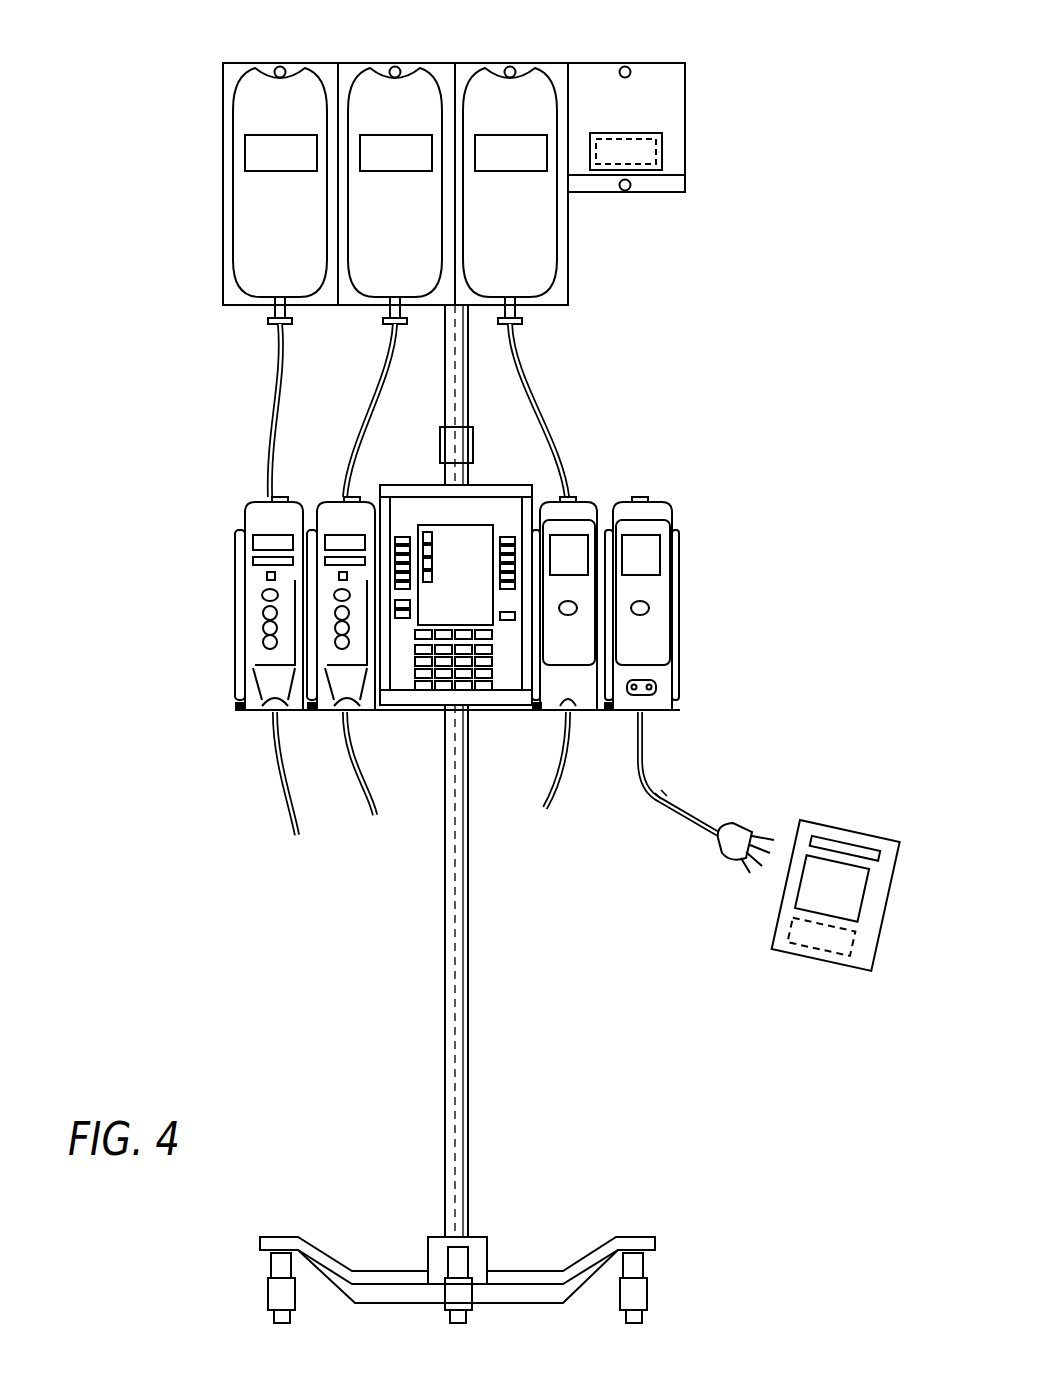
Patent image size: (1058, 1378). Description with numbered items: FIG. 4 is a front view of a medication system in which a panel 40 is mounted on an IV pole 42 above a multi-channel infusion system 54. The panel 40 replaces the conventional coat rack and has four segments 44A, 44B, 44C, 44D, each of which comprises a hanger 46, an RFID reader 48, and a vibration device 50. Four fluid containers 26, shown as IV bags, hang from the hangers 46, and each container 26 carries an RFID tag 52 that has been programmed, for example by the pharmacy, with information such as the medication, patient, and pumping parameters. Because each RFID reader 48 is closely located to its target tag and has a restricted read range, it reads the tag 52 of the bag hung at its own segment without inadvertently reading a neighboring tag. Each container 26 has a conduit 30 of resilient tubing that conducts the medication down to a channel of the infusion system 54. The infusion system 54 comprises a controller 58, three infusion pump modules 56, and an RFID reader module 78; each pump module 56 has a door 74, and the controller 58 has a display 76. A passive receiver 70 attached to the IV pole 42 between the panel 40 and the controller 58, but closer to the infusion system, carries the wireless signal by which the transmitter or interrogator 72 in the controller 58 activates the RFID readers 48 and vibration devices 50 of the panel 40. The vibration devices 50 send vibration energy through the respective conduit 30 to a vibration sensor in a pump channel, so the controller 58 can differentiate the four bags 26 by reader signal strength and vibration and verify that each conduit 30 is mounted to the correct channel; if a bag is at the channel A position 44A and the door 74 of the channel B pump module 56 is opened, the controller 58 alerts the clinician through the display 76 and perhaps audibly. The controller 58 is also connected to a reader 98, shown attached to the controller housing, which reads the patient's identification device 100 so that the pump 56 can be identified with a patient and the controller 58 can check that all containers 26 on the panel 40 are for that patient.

The fluid container 26 is at (243, 248).
The conduit 30 is at (278, 412).
The panel 40 is at (506, 155).
The IV pole 42 is at (470, 365).
The segment 44A is at (240, 63).
The segment 44B is at (353, 63).
The segment 44C is at (468, 63).
The segment 44D is at (582, 63).
The hanger 46 is at (283, 66).
The RFID reader 48 is at (648, 155).
The vibration device 50 is at (627, 192).
The RFID tag 52 is at (268, 148).
The infusion system 54 is at (494, 611).
The infusion pump module 56 is at (255, 690).
The controller 58 is at (425, 720).
The passive receiver 70 is at (440, 447).
The transmitter 72 is at (469, 570).
The door 74 is at (326, 510).
The display 76 is at (470, 538).
The RFID reader module 78 is at (660, 502).
The reader 98 is at (740, 825).
The patient's identification device 100 is at (858, 826).